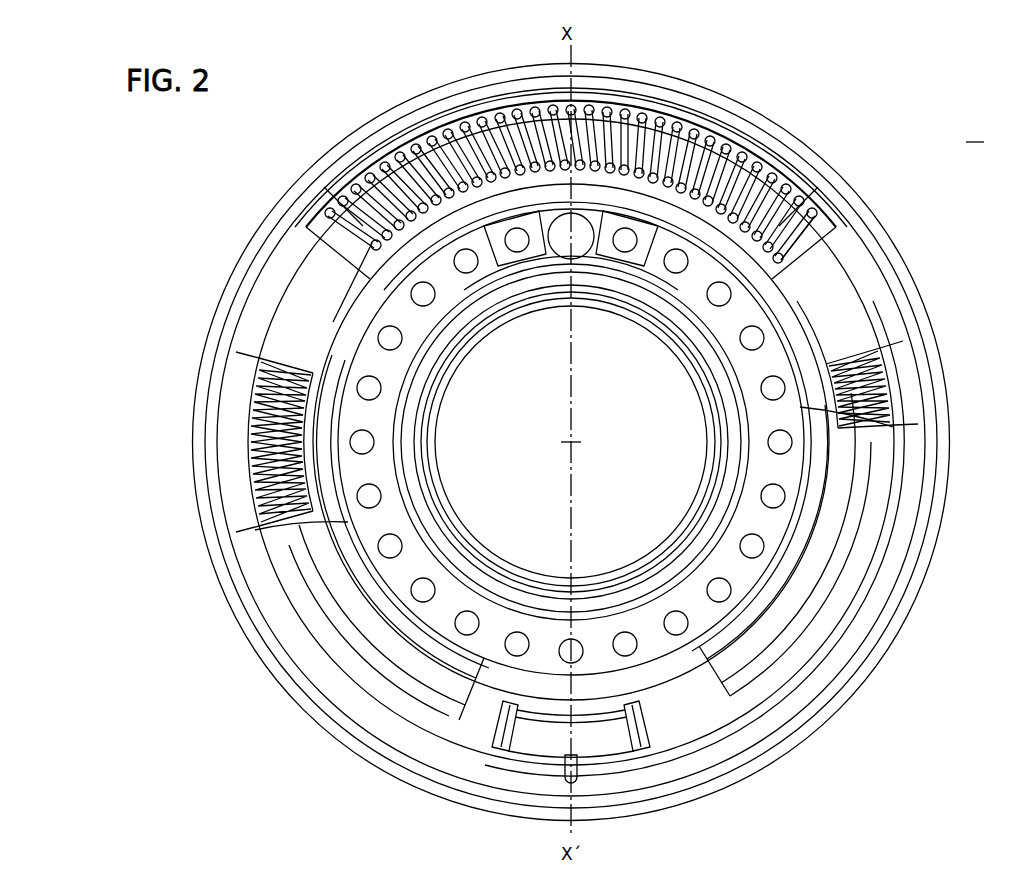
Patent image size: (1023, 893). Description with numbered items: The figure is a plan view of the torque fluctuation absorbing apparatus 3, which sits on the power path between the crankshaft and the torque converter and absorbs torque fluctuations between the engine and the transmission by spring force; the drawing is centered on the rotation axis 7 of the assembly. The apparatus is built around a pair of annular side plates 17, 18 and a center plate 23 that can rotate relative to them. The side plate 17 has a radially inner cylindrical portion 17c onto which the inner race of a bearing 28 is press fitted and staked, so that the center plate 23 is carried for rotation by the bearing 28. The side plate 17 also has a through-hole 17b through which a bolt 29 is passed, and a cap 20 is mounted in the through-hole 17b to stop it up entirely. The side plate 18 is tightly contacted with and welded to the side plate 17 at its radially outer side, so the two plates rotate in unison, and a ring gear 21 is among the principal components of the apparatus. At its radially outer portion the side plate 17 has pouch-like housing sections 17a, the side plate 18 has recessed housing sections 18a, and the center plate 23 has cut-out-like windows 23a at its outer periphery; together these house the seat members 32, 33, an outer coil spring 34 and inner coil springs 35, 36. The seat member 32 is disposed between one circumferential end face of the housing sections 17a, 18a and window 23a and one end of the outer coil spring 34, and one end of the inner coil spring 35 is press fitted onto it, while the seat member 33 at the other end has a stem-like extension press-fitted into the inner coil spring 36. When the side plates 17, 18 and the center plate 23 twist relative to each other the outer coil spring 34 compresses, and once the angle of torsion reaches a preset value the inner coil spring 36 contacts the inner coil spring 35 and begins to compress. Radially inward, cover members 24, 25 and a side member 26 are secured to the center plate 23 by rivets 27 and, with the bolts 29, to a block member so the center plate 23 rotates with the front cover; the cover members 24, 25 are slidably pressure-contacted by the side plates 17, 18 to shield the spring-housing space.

The torque fluctuation absorbing apparatus 3 is at (975, 131).
The rotation axis 7 is at (573, 442).
The side plate 17 is at (478, 160).
The housing section 17a is at (645, 165).
The through-hole 17b is at (604, 175).
The cylindrical portion 17c is at (483, 555).
The side plate 18 is at (910, 480).
The housing section 18a is at (867, 517).
The cap 20 is at (549, 218).
The ring gear 21 is at (265, 230).
The center plate 23 is at (797, 325).
The window 23a is at (383, 252).
The cover member 24 is at (683, 223).
The cover member 25 is at (765, 530).
The side member 26 is at (622, 225).
The rivet 27 is at (730, 290).
The bearing 28 is at (447, 547).
The bolt 29 is at (350, 441).
The seat member 32 is at (335, 195).
The seat member 33 is at (757, 207).
The outer coil spring 34 is at (650, 175).
The inner coil spring 35 is at (463, 200).
The inner coil spring 36 is at (760, 200).